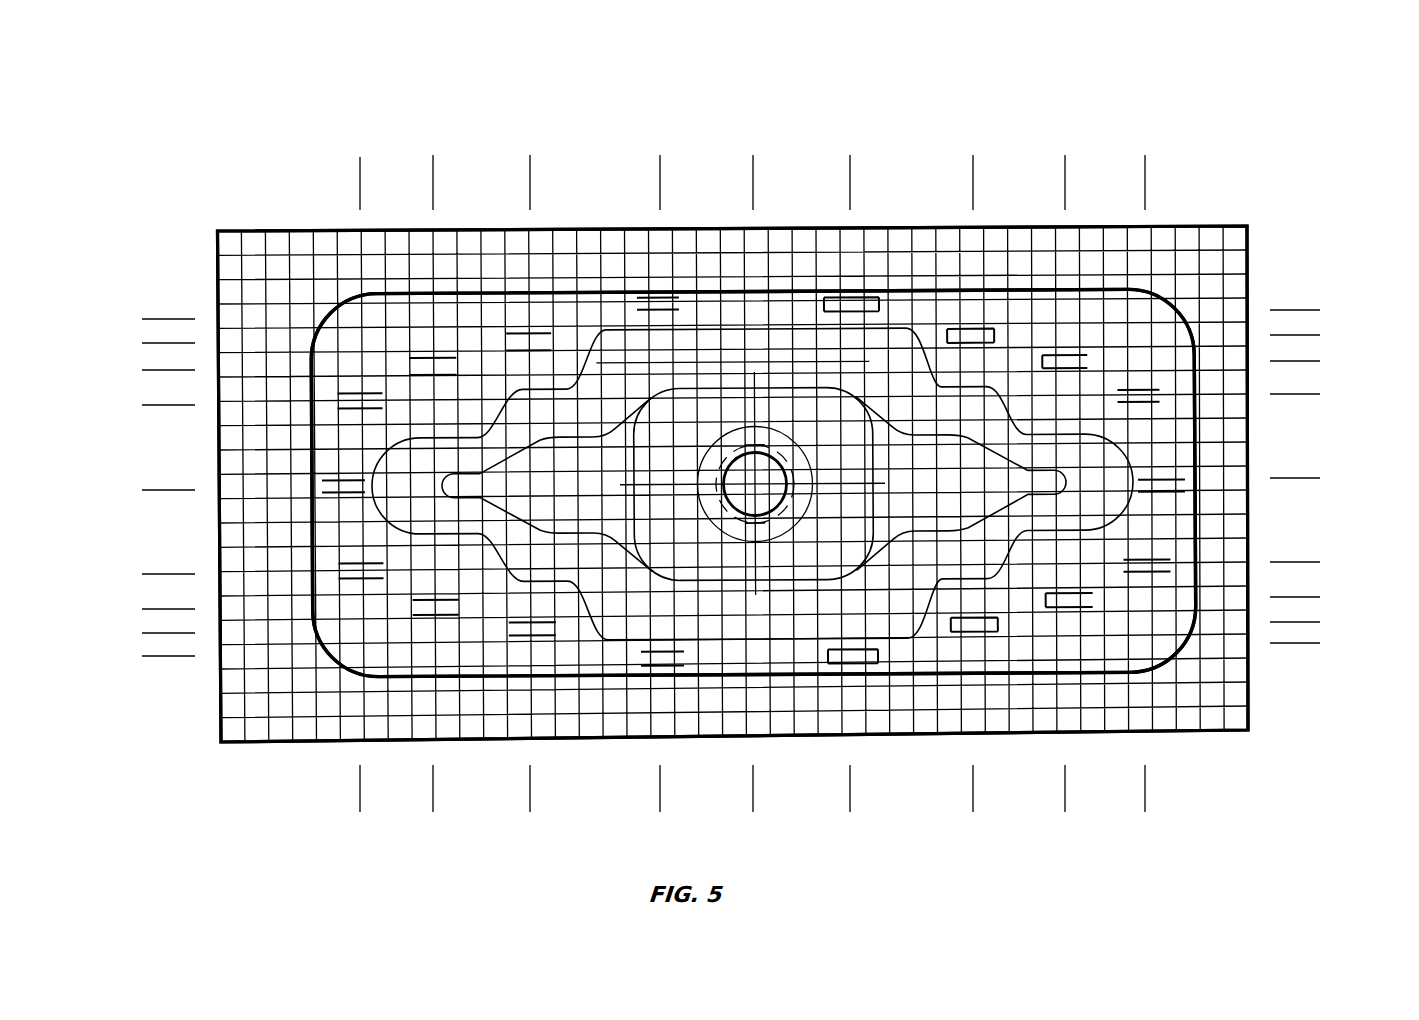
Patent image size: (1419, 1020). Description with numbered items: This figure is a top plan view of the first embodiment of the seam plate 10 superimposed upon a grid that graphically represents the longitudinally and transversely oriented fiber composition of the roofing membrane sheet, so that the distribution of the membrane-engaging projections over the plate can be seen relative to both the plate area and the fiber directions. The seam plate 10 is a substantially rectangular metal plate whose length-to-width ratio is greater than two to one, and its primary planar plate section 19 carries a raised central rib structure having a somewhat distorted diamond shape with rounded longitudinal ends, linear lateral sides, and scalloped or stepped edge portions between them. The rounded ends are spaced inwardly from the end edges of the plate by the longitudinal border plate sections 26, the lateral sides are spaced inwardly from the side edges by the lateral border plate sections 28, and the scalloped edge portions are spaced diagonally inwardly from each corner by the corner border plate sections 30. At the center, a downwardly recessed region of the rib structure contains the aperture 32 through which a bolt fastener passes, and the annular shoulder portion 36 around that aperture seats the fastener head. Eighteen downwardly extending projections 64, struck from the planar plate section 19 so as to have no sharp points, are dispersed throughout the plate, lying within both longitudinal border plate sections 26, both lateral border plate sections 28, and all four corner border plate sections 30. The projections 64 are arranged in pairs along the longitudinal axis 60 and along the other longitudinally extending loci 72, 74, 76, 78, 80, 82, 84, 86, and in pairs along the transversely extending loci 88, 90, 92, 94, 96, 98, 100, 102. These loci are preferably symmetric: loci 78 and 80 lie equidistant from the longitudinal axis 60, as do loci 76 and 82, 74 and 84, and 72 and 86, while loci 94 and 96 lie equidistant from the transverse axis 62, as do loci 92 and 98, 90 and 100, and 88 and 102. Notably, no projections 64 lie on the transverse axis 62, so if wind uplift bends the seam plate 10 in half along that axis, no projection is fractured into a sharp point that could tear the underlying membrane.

The seam plate 10 is at (1265, 207).
The primary planar plate section 19 is at (1045, 305).
The longitudinal border plate sections 26 is at (345, 515).
The lateral border plate sections 28 is at (893, 305).
The corner border plate sections 30 is at (372, 338).
The aperture 32 is at (745, 473).
The annular shoulder portion 36 is at (782, 427).
The longitudinal axis 60 is at (180, 490).
The transverse axis 62 is at (757, 165).
The downwardly extending projections 64 is at (420, 355).
The longitudinal locus 72 is at (163, 318).
The longitudinal locus 74 is at (155, 343).
The longitudinal locus 76 is at (150, 373).
The longitudinal locus 78 is at (158, 405).
The longitudinal locus 80 is at (165, 573).
The longitudinal locus 82 is at (160, 608).
The longitudinal locus 84 is at (155, 632).
The longitudinal locus 86 is at (163, 658).
The transverse locus 88 is at (358, 180).
The transverse locus 90 is at (432, 185).
The transverse locus 92 is at (527, 185).
The transverse locus 94 is at (658, 185).
The transverse locus 96 is at (852, 165).
The transverse locus 98 is at (975, 185).
The transverse locus 100 is at (1068, 165).
The transverse locus 102 is at (1148, 170).